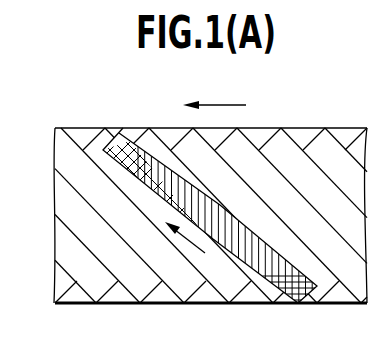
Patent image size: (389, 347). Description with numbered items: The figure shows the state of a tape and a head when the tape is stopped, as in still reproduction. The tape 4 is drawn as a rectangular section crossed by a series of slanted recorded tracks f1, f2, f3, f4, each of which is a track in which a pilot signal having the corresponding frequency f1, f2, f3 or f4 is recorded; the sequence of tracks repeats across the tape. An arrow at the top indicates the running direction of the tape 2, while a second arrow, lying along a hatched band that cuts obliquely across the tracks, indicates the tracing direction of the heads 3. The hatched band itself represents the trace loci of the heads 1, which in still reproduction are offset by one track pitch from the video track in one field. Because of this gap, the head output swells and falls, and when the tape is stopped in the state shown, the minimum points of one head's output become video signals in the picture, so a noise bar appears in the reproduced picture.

The trace loci of the heads 1 is at (297, 305).
The running direction of the tape 2 is at (216, 103).
The tracing direction of the heads 3 is at (184, 238).
The tape 4 is at (210, 215).
The track with pilot signal of frequency f1 is at (148, 215).
The track with pilot signal of frequency f2 is at (167, 215).
The track with pilot signal of frequency f3 is at (211, 215).
The track with pilot signal of frequency f4 is at (190, 215).